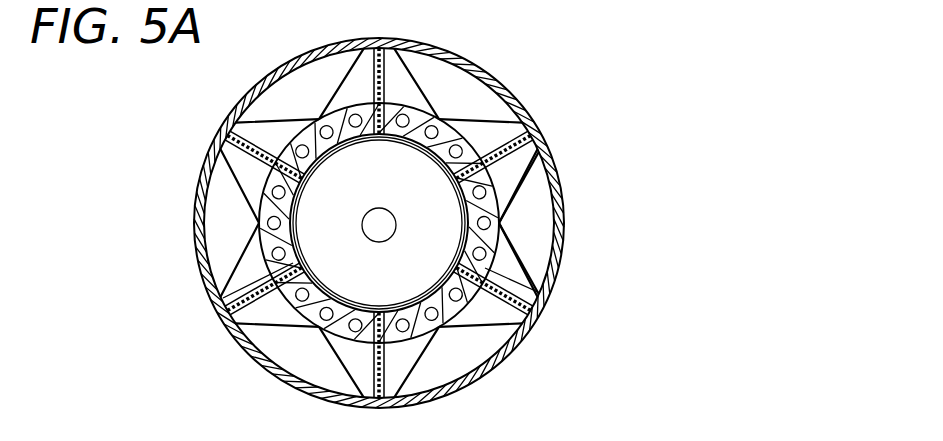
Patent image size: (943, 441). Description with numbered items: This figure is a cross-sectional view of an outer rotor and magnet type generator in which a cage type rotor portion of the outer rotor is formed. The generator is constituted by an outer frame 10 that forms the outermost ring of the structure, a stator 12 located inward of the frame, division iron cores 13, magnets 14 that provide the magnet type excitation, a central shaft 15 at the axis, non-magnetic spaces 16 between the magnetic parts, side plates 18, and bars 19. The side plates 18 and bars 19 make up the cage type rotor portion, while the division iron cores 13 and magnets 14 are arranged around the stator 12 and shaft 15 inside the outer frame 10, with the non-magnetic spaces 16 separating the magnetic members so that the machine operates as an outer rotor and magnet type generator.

The outer frame 10 is at (458, 56).
The stator 12 is at (227, 302).
The division iron cores 13 is at (505, 152).
The magnets 14 is at (500, 142).
The shaft 15 is at (380, 228).
The non-magnetic spaces 16 is at (525, 230).
The side plates 18 is at (453, 310).
The bars 19 is at (550, 290).